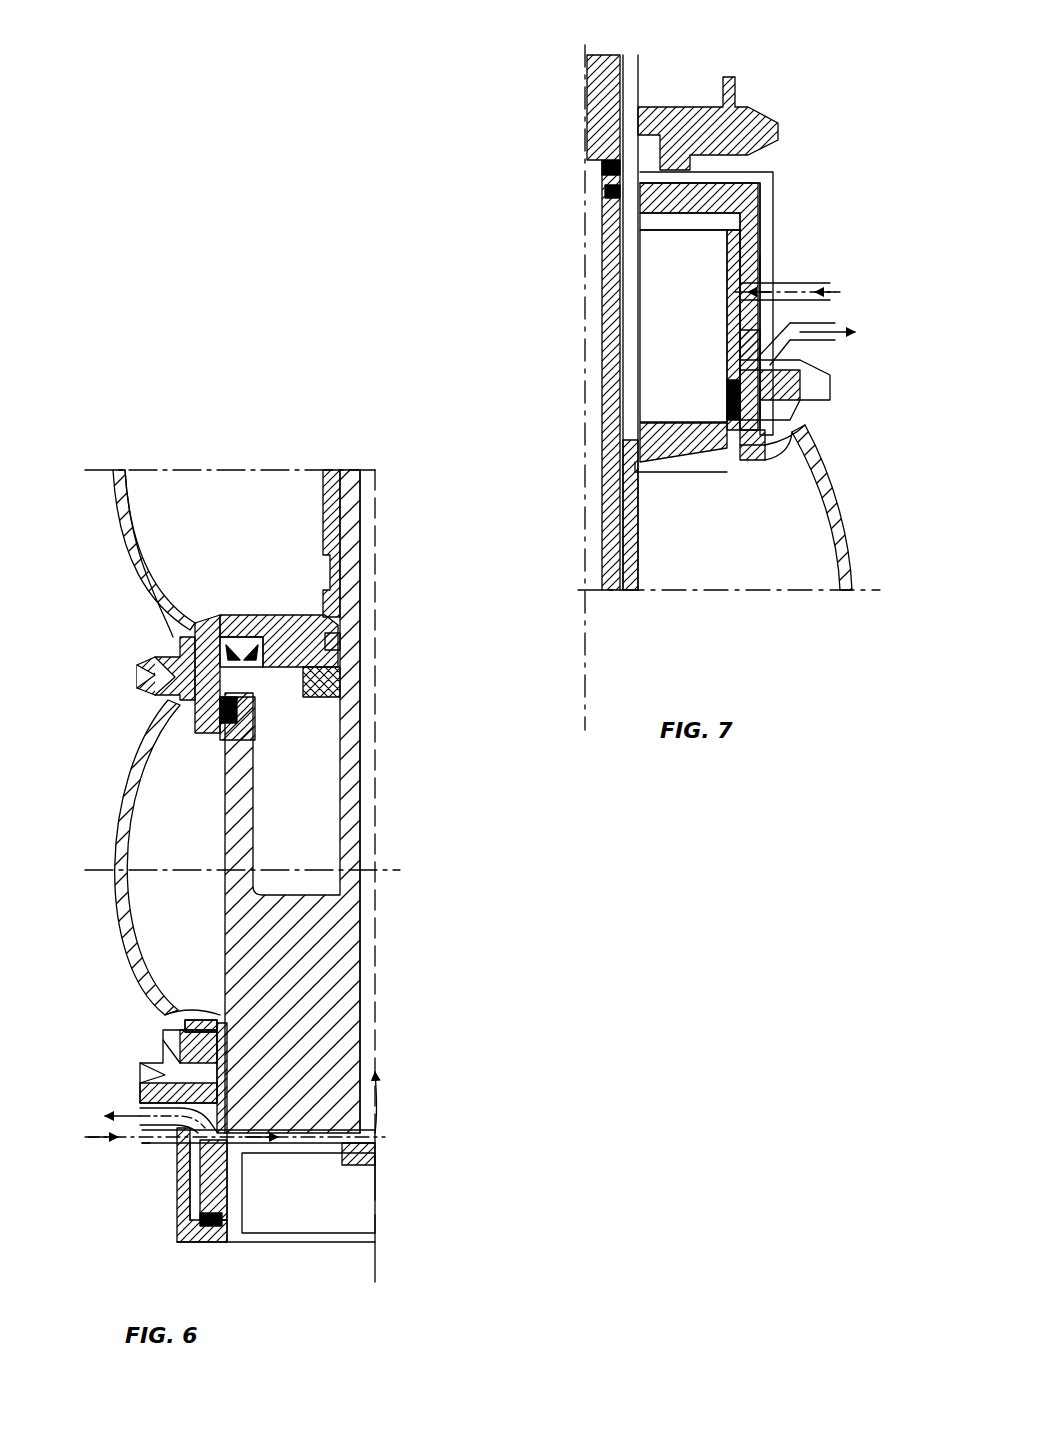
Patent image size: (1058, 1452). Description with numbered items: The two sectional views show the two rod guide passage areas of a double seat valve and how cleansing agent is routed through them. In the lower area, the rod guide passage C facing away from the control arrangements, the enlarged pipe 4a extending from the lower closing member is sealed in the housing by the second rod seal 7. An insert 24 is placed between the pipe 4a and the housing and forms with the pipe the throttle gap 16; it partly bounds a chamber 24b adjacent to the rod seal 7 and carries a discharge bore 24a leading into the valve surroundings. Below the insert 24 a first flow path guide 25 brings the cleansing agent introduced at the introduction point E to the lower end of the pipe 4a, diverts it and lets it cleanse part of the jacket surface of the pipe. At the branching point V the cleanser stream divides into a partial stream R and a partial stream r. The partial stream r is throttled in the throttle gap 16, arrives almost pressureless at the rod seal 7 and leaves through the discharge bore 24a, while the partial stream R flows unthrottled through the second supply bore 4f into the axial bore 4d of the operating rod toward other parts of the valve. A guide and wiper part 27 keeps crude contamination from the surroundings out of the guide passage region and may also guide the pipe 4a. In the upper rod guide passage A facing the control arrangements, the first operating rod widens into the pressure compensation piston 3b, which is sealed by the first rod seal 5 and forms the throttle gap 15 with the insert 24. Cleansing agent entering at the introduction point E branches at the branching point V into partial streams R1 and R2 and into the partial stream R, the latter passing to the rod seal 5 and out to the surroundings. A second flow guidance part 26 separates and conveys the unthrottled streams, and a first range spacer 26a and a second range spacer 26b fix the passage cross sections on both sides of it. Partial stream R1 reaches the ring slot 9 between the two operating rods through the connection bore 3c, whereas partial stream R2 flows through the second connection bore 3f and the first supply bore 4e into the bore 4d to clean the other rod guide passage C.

In FIG. 6, the pipe 4a is at (245, 931).
In FIG. 6, the second rod seal 7 is at (190, 1013).
In FIG. 6, the rod guide passage C is at (218, 1020).
In FIG. 6, the insert 24 is at (175, 1075).
In FIG. 7, the insert 24 is at (800, 390).
In FIG. 6, the discharge bore 24a is at (180, 1096).
In FIG. 7, the discharge bore 24a is at (762, 333).
In FIG. 6, the chamber 24b is at (270, 1040).
In FIG. 7, the chamber 24b is at (765, 388).
In FIG. 6, the first flow path guide 25 is at (205, 1195).
In FIG. 6, the guide and wiper part 27 is at (205, 1236).
In FIG. 6, the throttle gap 16 is at (255, 1090).
In FIG. 6, the bore 4d is at (378, 1050).
In FIG. 6, the second supply bore 4f is at (306, 1140).
In FIG. 6, the partial stream R is at (380, 1100).
In FIG. 6, the partial stream r is at (246, 1097).
In FIG. 7, the partial stream r is at (676, 333).
In FIG. 6, the introduction point E is at (150, 1142).
In FIG. 7, the introduction point E is at (812, 283).
In FIG. 6, the branching point V is at (178, 1150).
In FIG. 7, the branching point V is at (738, 275).
In FIG. 7, the second connection bore 3f is at (612, 163).
In FIG. 7, the first supply bore 4e is at (614, 190).
In FIG. 7, the connection bore 3c is at (640, 218).
In FIG. 7, the partial stream R2 is at (762, 245).
In FIG. 7, the partial stream R1 is at (752, 222).
In FIG. 7, the second flow guidance part 26 is at (740, 207).
In FIG. 7, the first range spacer 26a is at (660, 258).
In FIG. 7, the second range spacer 26b is at (720, 158).
In FIG. 7, the throttle gap 15 is at (775, 345).
In FIG. 7, the first rod seal 5 is at (790, 472).
In FIG. 7, the rod guide passage A is at (740, 447).
In FIG. 7, the pressure compensation piston 3b is at (727, 445).
In FIG. 7, the ring slot 9 is at (625, 565).